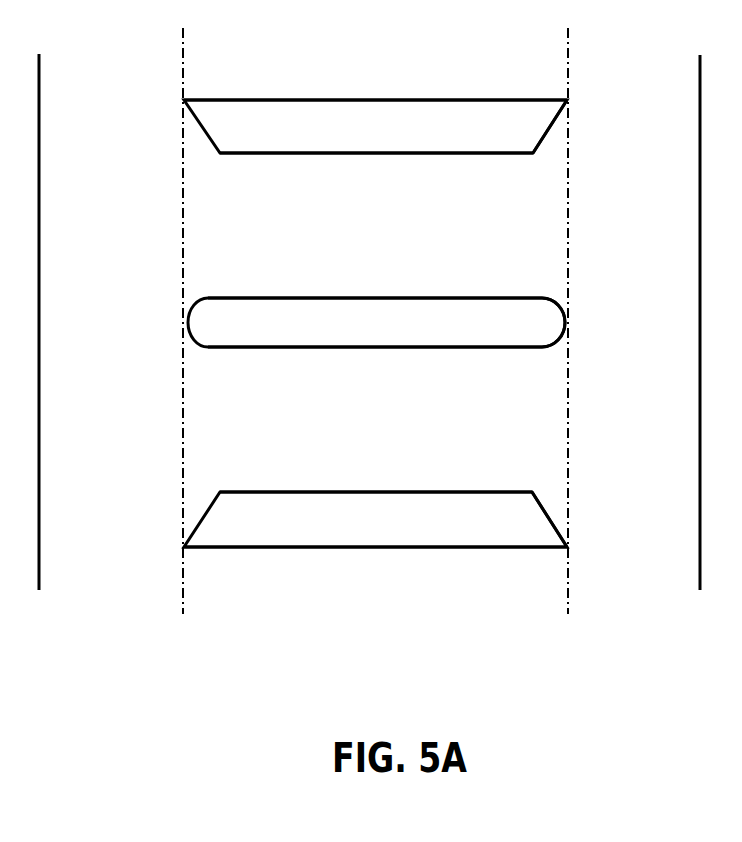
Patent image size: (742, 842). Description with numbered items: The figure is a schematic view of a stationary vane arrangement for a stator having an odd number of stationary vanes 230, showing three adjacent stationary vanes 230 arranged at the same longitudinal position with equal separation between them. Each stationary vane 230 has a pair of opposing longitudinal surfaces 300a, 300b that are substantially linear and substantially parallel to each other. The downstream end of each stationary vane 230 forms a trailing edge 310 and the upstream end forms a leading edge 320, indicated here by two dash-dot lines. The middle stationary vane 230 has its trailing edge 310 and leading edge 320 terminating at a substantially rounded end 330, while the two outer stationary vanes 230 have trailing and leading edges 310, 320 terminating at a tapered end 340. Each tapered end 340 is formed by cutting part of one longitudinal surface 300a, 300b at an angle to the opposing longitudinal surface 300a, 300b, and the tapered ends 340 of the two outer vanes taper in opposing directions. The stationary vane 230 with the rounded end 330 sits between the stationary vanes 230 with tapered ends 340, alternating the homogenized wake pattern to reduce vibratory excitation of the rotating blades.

The stationary vane 230 is at (365, 98).
The longitudinal surface 300a is at (438, 99).
The longitudinal surface 300b is at (427, 154).
The trailing edge 310 is at (581, 173).
The leading edge 320 is at (176, 139).
The rounded end 330 is at (565, 313).
The tapered end 340 is at (562, 112).